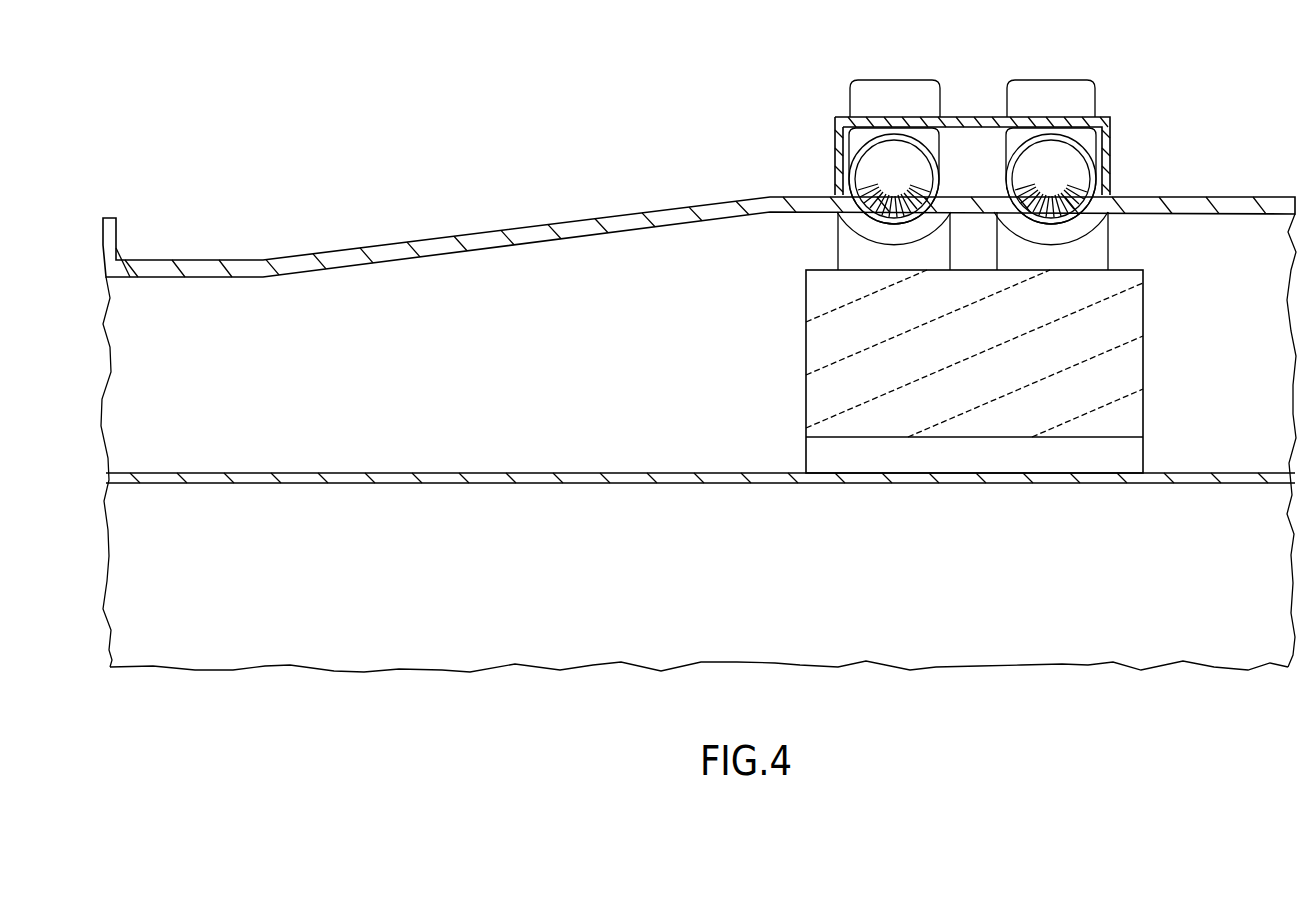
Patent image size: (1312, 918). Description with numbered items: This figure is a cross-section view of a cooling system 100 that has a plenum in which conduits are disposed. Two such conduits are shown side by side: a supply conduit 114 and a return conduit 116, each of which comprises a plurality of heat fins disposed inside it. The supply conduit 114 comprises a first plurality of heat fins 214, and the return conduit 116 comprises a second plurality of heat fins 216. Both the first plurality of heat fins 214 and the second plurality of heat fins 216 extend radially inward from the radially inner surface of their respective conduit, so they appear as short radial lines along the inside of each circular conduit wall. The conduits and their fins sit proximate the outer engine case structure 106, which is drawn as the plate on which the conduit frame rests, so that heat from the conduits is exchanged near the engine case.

The cooling system 100 is at (958, 122).
The outer engine case structure 106 is at (1250, 210).
The supply conduit 114 is at (838, 180).
The return conduit 116 is at (1110, 147).
The first plurality of heat fins 214 is at (880, 192).
The second plurality of heat fins 216 is at (1047, 192).